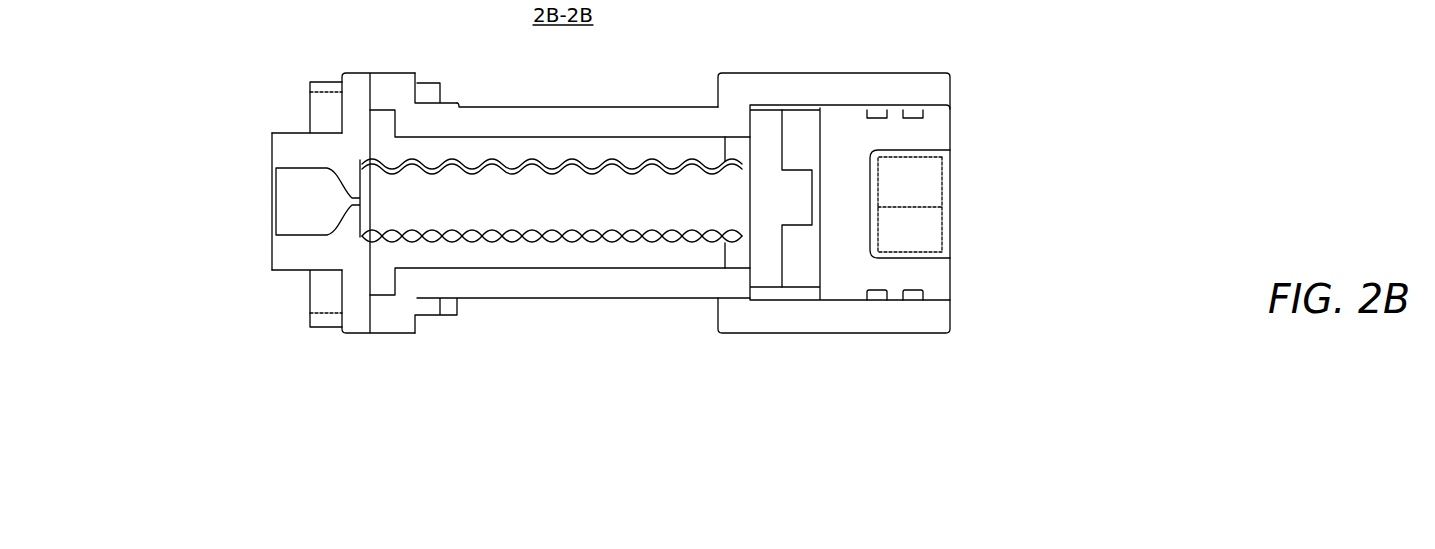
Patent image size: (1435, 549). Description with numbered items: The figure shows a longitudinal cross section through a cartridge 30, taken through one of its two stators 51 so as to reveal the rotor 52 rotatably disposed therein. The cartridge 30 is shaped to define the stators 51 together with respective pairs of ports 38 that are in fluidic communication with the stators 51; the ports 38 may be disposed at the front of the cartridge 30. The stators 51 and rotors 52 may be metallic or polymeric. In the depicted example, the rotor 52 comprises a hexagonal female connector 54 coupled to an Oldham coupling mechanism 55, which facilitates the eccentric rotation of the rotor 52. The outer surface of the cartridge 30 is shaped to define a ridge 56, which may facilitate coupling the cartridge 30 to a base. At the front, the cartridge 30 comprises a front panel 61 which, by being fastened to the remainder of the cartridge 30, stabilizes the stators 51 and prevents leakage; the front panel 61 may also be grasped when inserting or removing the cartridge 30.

The cartridge 30 is at (966, 58).
The port 38 is at (292, 198).
The stator 51 is at (497, 244).
The rotor 52 is at (563, 213).
The hexagonal female connector 54 is at (927, 233).
The Oldham coupling mechanism 55 is at (803, 120).
The ridge 56 is at (718, 77).
The front panel 61 is at (357, 73).